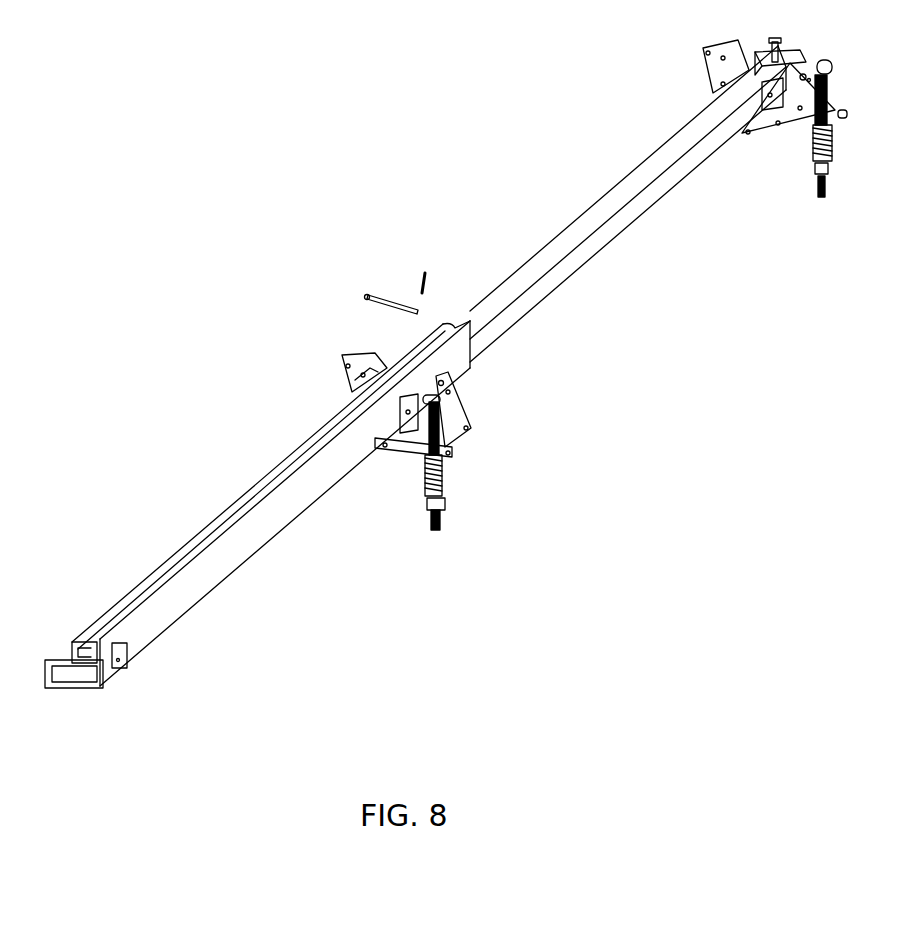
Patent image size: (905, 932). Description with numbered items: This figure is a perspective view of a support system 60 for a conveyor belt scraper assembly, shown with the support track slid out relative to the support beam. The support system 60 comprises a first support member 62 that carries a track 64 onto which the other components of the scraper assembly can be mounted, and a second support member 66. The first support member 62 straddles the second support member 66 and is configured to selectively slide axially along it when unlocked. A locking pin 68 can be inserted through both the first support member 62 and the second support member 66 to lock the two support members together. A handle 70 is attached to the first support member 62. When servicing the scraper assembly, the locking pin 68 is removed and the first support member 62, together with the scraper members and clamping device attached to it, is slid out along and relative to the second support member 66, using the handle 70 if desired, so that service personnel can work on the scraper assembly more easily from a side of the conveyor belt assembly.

The support system 60 is at (301, 178).
The first support member 62 is at (228, 557).
The track 64 is at (250, 490).
The second support member 66 is at (600, 210).
The locking pin 68 is at (397, 298).
The handle 70 is at (53, 675).